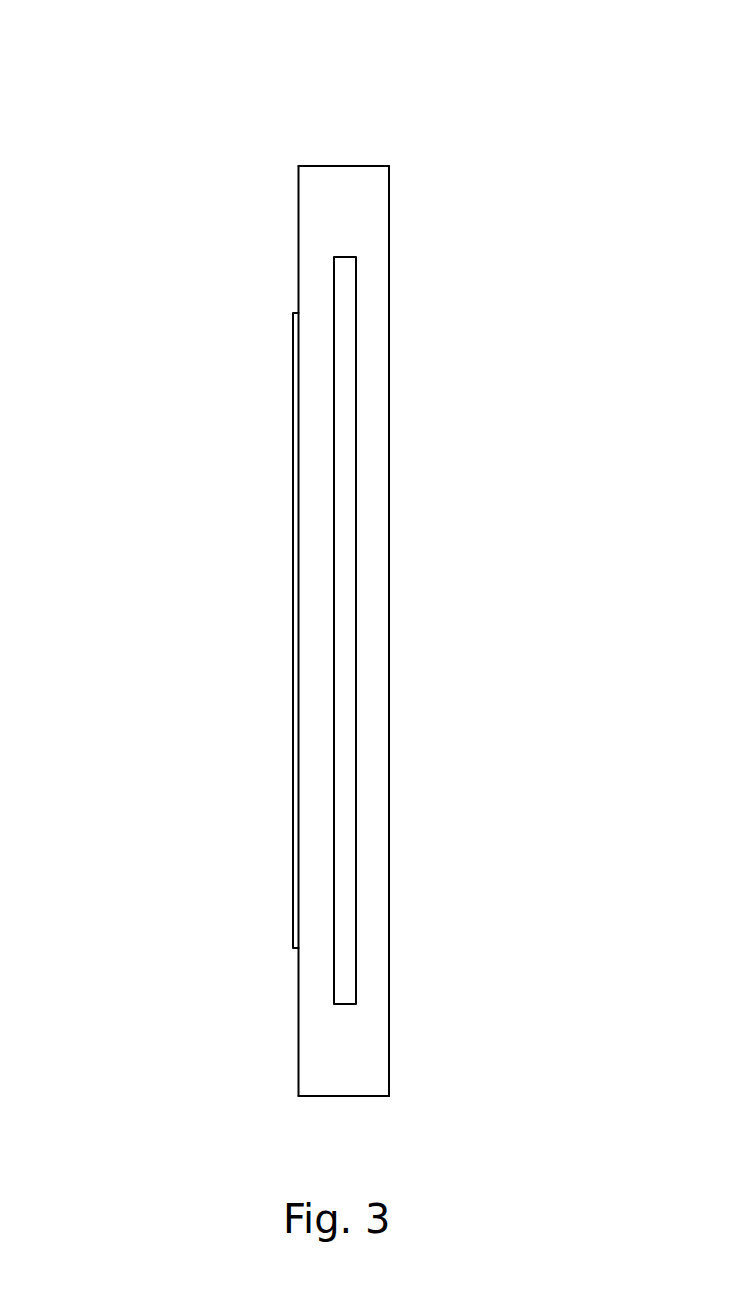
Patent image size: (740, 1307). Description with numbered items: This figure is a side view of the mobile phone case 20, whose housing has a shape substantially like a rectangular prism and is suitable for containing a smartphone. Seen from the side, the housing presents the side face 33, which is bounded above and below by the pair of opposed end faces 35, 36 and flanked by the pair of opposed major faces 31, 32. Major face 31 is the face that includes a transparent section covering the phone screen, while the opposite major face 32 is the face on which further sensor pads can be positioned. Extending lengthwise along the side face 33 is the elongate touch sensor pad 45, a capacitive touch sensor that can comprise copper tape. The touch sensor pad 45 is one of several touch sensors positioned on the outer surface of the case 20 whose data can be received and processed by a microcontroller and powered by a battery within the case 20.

The case 20 is at (193, 128).
The major face 31 is at (390, 672).
The major face 32 is at (299, 964).
The side face 33 is at (331, 202).
The end face 35 is at (349, 170).
The end face 36 is at (342, 1096).
The touch sensor pad 45 is at (343, 357).